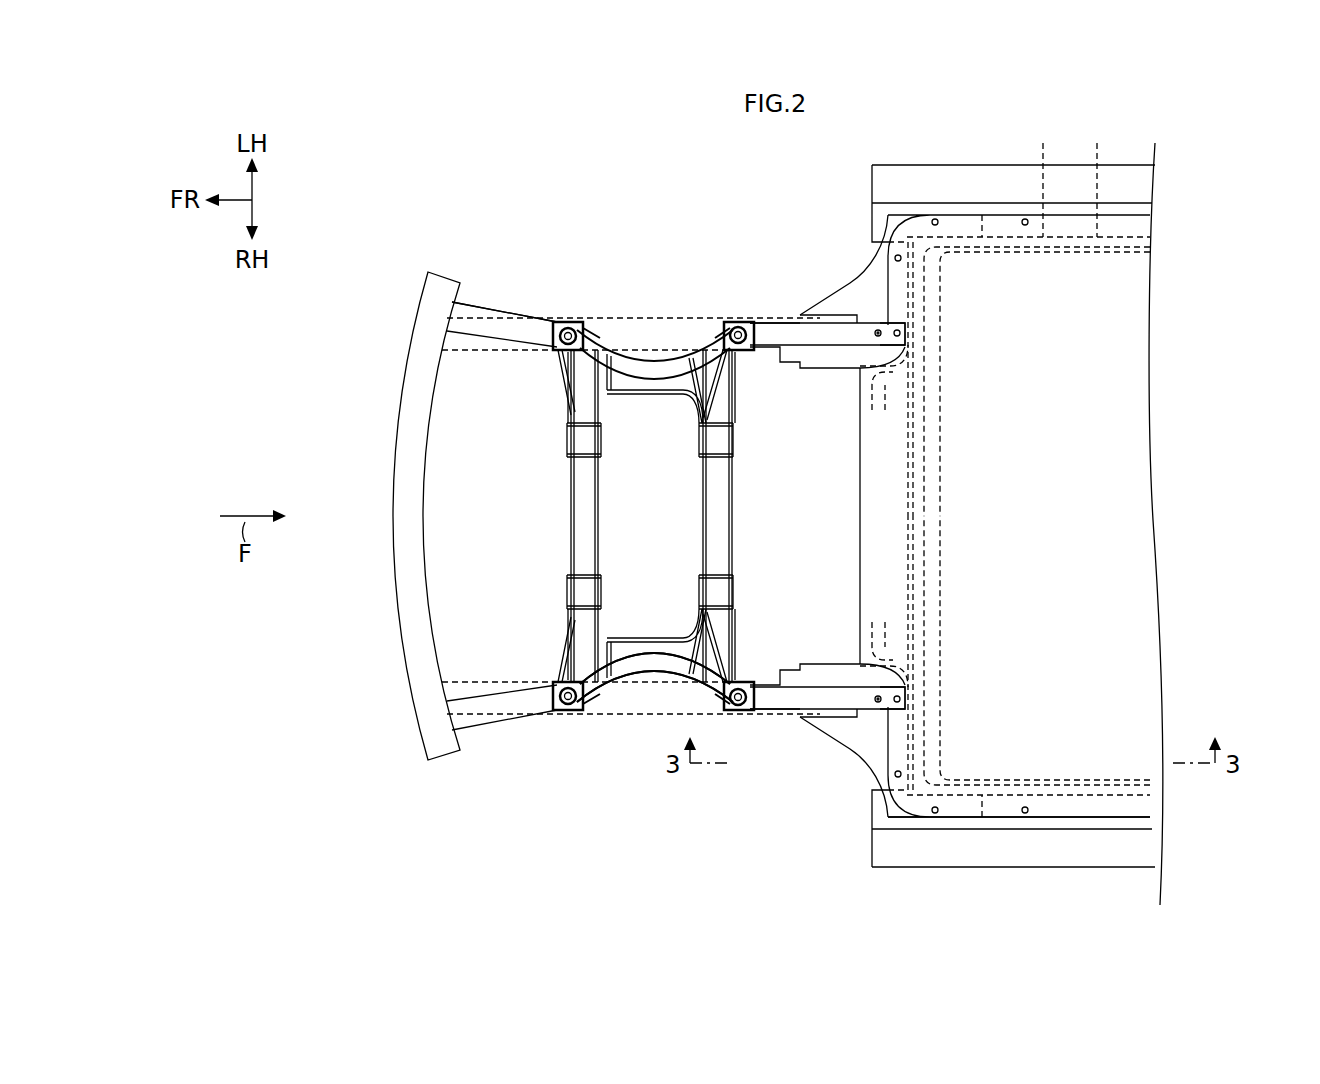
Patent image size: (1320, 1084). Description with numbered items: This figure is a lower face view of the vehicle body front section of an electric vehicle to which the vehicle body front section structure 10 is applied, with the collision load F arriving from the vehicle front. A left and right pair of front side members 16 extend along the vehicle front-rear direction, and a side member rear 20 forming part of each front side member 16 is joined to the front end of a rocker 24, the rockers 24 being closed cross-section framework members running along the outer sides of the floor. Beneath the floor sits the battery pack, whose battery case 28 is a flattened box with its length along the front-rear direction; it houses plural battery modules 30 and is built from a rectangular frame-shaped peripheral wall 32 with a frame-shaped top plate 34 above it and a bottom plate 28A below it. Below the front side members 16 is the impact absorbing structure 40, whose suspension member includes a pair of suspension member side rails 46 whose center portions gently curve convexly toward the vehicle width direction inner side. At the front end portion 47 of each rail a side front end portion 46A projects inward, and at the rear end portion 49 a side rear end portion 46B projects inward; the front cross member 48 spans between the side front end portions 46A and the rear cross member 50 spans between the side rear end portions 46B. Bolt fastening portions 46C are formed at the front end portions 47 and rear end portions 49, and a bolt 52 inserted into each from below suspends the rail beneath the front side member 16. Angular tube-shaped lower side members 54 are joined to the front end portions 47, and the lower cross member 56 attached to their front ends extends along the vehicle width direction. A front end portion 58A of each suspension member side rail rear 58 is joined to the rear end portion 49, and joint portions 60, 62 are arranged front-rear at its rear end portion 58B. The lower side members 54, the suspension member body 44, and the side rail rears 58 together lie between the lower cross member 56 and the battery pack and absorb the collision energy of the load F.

The vehicle body front section structure 10 is at (508, 197).
The front side member 16 is at (620, 322).
The side member rear 20 is at (853, 290).
The rocker 24 is at (990, 168).
The battery case 28 is at (1098, 829).
The floor member front portion (36) 28A is at (1000, 810).
The battery module 30 is at (1140, 527).
The peripheral wall 32 is at (1097, 175).
The top plate 34 is at (1043, 175).
The impact absorbing structure 40 is at (620, 798).
The suspension member body 44 is at (738, 492).
The suspension member side rail 46 is at (647, 360).
The side front end portion 46A is at (572, 383).
The side rear end portion 46B is at (740, 390).
The bolt fastening portion 46C is at (590, 325).
The front end portion 47 is at (590, 360).
The front cross member 48 is at (577, 507).
The rear end portion 49 is at (740, 377).
The rear cross member 50 is at (722, 530).
The bolt 52 is at (563, 322).
The lower side member 54 is at (473, 312).
The lower cross member 56 is at (405, 533).
The suspension member side rail rear 58 is at (823, 333).
The front end portion 58A is at (762, 335).
The rear end portion 58B is at (893, 330).
The joint portion 60 is at (877, 337).
The joint portion 62 is at (900, 335).